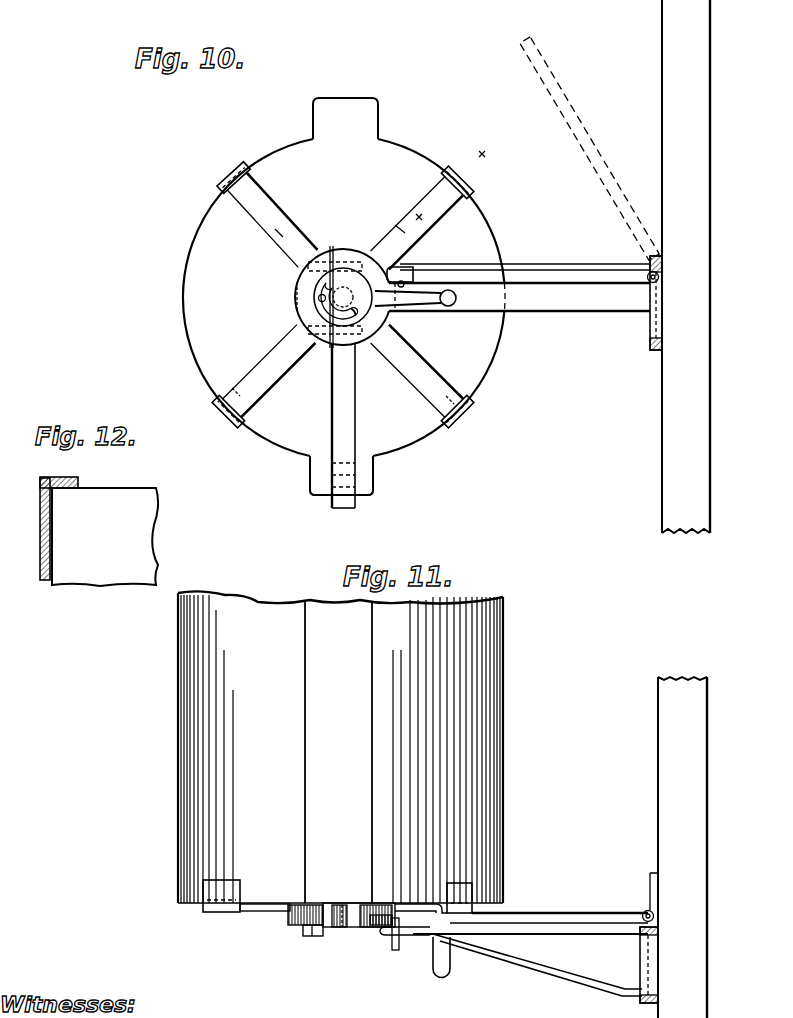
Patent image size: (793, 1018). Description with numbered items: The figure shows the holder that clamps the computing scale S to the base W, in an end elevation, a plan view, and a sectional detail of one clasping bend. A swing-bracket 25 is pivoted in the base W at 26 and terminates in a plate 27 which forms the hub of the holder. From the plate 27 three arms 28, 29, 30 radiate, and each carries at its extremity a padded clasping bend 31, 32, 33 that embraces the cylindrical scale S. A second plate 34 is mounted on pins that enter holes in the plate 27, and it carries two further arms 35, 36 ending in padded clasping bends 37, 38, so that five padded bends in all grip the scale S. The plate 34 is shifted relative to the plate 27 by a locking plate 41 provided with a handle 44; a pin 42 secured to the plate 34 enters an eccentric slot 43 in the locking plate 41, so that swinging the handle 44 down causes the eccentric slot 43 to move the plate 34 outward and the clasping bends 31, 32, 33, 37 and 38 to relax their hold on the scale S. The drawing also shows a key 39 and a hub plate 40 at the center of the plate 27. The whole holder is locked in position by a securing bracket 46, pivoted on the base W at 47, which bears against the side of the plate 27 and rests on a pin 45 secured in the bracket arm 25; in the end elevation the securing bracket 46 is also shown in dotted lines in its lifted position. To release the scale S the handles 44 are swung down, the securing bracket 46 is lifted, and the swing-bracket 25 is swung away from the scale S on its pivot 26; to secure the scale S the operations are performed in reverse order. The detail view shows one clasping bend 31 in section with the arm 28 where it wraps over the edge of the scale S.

In FIG. 10, the swing-bracket 25 is at (592, 318).
In FIG. 11, the swing-bracket 25 is at (550, 913).
In FIG. 10, the pivot 26 is at (648, 340).
In FIG. 11, the pivot 26 is at (649, 938).
In FIG. 10, the plate 27 is at (350, 258).
In FIG. 11, the plate 27 is at (340, 928).
In FIG. 10, the arm 28 is at (388, 226).
In FIG. 11, the arm 28 is at (432, 915).
In FIG. 12, the arm 28 is at (42, 560).
In FIG. 10, the arm 29 is at (428, 392).
In FIG. 10, the arm 30 is at (343, 430).
In FIG. 10, the padded clasping bend 31 is at (450, 166).
In FIG. 11, the padded clasping bend 31 is at (465, 893).
In FIG. 12, the padded clasping bend 31 is at (72, 480).
In FIG. 10, the padded clasping bend 32 is at (466, 404).
In FIG. 10, the padded clasping bend 33 is at (357, 501).
In FIG. 10, the plate 34 is at (297, 282).
In FIG. 11, the plate 34 is at (290, 918).
In FIG. 10, the arm 35 is at (274, 212).
In FIG. 11, the arm 35 is at (250, 912).
In FIG. 10, the arm 36 is at (269, 371).
In FIG. 10, the padded clasping bend 37 is at (243, 162).
In FIG. 11, the padded clasping bend 37 is at (215, 893).
In FIG. 10, the padded clasping bend 38 is at (240, 432).
In FIG. 10, the key 39 is at (330, 250).
In FIG. 10, the hub plate 40 is at (328, 345).
In FIG. 10, the locking plate 41 is at (327, 306).
In FIG. 11, the locking plate 41 is at (308, 937).
In FIG. 10, the pin 42 is at (318, 298).
In FIG. 11, the pin 42 is at (314, 940).
In FIG. 10, the eccentric slot 43 is at (348, 314).
In FIG. 10, the handle 44 is at (420, 312).
In FIG. 11, the handle 44 is at (446, 967).
In FIG. 10, the pin 45 is at (403, 272).
In FIG. 11, the pin 45 is at (392, 948).
In FIG. 10, the securing bracket 46 is at (568, 128).
In FIG. 11, the securing bracket 46 is at (545, 948).
In FIG. 10, the pivot 47 is at (660, 277).
In FIG. 11, the pivot 47 is at (644, 953).
In FIG. 10, the scale S is at (487, 355).
In FIG. 11, the scale S is at (188, 778).
In FIG. 12, the scale S is at (146, 533).
In FIG. 10, the base W is at (703, 305).
In FIG. 11, the base W is at (668, 794).